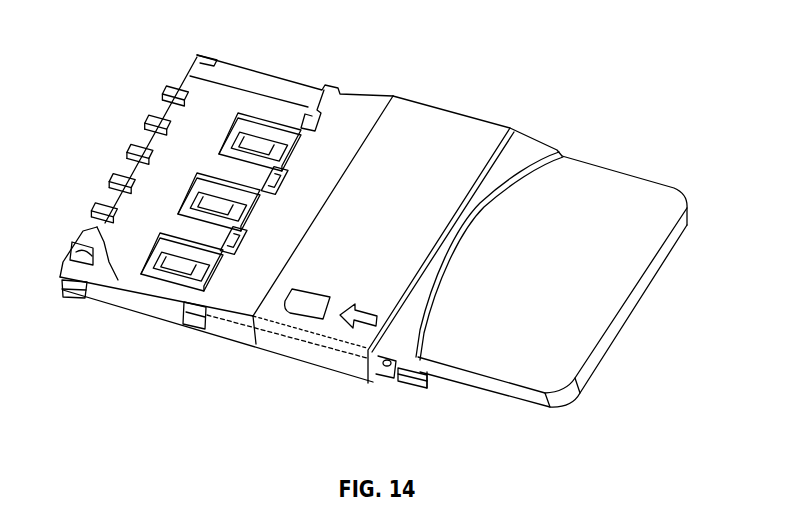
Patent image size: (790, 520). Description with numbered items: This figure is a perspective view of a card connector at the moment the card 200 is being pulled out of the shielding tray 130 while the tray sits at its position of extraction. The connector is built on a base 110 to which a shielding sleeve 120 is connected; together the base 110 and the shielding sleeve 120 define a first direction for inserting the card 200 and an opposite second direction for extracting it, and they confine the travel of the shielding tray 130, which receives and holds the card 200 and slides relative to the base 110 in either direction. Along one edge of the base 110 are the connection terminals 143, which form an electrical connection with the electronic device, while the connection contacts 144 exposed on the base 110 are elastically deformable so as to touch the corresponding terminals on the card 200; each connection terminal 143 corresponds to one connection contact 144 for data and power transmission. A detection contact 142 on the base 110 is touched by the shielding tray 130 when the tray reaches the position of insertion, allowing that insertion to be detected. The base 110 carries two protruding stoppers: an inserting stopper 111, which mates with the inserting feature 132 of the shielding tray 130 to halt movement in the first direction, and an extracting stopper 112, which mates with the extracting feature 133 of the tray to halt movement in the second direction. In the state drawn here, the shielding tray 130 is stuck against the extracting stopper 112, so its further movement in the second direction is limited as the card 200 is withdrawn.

The base 110 is at (195, 55).
The inserting stopper 111 is at (65, 296).
The extracting stopper 112 is at (416, 388).
The shielding sleeve 120 is at (456, 130).
The shielding tray 130 is at (355, 108).
The inserting feature 132 is at (197, 332).
The extracting feature 133 is at (382, 368).
The detection contact 142 is at (77, 242).
The connection terminals 143 is at (173, 93).
The connection contacts 144 is at (259, 127).
The card 200 is at (626, 193).